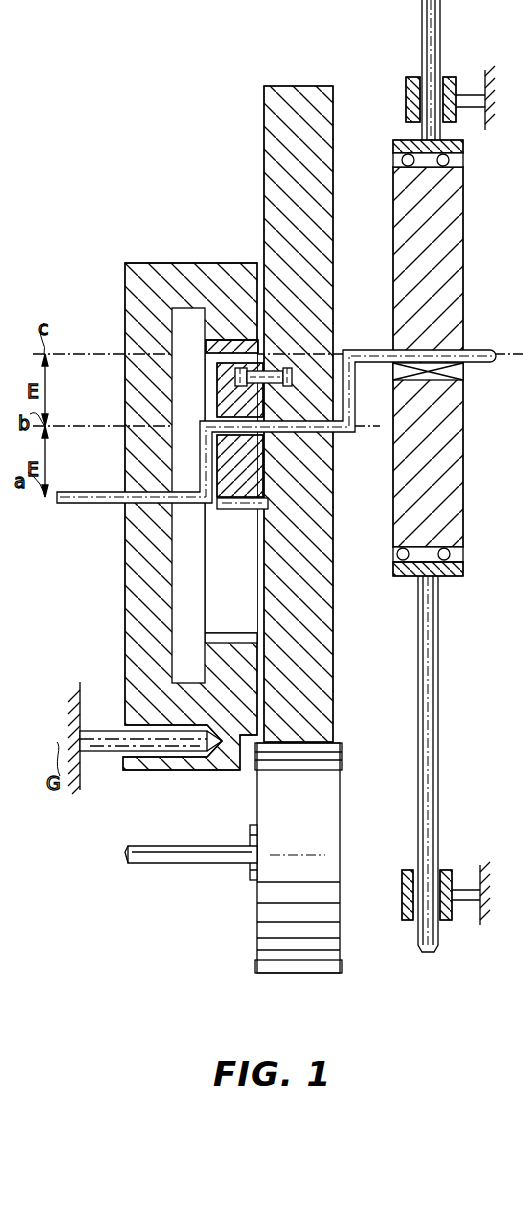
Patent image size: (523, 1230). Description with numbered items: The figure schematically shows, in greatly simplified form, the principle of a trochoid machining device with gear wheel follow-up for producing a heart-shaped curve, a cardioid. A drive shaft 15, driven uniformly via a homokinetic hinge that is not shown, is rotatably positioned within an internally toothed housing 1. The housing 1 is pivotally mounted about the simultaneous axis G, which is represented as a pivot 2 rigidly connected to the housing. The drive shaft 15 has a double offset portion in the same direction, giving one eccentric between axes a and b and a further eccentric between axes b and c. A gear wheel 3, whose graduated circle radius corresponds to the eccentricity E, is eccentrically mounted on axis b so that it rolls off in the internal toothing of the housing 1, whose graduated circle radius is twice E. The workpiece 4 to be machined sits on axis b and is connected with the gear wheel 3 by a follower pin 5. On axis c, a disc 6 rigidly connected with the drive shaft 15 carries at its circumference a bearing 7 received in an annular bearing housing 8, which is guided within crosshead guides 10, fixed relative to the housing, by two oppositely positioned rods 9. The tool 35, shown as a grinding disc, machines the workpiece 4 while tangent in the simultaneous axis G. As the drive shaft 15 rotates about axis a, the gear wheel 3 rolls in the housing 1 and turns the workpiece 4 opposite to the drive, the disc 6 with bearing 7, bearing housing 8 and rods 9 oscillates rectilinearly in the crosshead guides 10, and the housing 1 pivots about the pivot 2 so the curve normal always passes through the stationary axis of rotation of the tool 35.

The internally toothed housing 1 is at (147, 612).
The pivot 2 is at (103, 752).
The gear wheel 3 is at (218, 500).
The workpiece 4 is at (322, 650).
The follower pin 5 is at (217, 390).
The disc 6 is at (454, 322).
The bearing 7 is at (452, 552).
The annular bearing housing 8 is at (460, 566).
The rods 9 is at (440, 28).
The crosshead guides 10 is at (473, 138).
The drive shaft 15 is at (95, 500).
The tool 35 is at (268, 793).